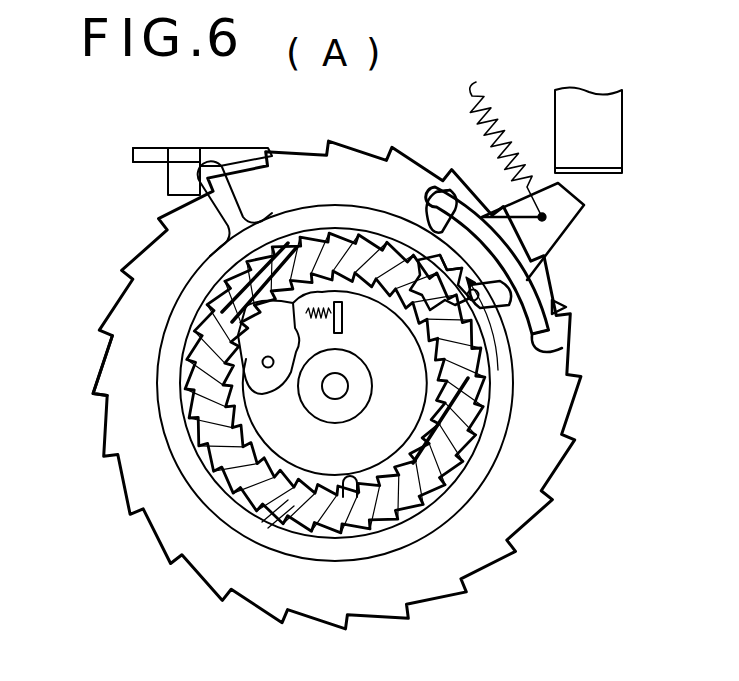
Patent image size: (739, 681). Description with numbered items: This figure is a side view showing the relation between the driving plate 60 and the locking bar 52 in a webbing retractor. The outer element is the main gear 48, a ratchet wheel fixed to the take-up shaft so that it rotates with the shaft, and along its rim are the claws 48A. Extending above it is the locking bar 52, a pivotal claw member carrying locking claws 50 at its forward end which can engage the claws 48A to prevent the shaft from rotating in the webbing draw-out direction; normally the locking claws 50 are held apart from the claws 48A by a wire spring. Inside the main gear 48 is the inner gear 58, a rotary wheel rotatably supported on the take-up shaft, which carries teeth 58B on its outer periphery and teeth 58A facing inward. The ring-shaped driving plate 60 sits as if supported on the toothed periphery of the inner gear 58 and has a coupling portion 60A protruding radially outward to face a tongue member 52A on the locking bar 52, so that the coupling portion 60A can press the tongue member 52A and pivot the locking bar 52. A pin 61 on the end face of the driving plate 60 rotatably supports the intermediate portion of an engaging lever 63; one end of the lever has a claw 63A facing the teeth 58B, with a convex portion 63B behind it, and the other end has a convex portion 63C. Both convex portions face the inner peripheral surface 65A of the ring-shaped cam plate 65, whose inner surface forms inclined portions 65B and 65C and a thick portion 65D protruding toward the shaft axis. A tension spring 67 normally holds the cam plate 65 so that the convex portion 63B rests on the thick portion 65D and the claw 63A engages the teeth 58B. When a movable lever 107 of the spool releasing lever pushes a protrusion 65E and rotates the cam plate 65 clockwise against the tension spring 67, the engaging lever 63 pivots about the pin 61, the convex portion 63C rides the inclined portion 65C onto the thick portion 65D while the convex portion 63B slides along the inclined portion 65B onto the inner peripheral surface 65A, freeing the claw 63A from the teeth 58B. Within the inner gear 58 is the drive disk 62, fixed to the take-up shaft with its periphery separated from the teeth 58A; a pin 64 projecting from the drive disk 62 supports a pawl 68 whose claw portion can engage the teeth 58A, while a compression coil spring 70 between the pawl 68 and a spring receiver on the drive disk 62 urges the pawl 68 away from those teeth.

The main gear 48 is at (116, 295).
The claws 48A is at (100, 367).
The locking claws 50 is at (262, 148).
The locking bar 52 is at (158, 144).
The tongue member 52A is at (173, 183).
The inner gear 58 is at (243, 510).
The teeth 58A is at (350, 480).
The teeth 58B is at (280, 533).
The driving plate 60 is at (352, 206).
The coupling portion 60A is at (222, 195).
The pin 61 is at (520, 268).
The drive disk 62 is at (383, 430).
The engaging lever 63 is at (530, 340).
The claw 63A is at (437, 192).
The convex portion 63B is at (455, 235).
The convex portion 63C is at (567, 308).
The pin 64 is at (260, 361).
The cam plate 65 is at (560, 340).
The inner peripheral surface 65A is at (545, 360).
The inclined portion 65B is at (430, 258).
The inclined portion 65C is at (512, 286).
The thick portion 65D is at (500, 360).
The protrusion 65E is at (590, 200).
The tension spring 67 is at (500, 127).
The pawl 68 is at (238, 375).
The compression coil spring 70 is at (325, 332).
The movable lever 107 is at (600, 120).